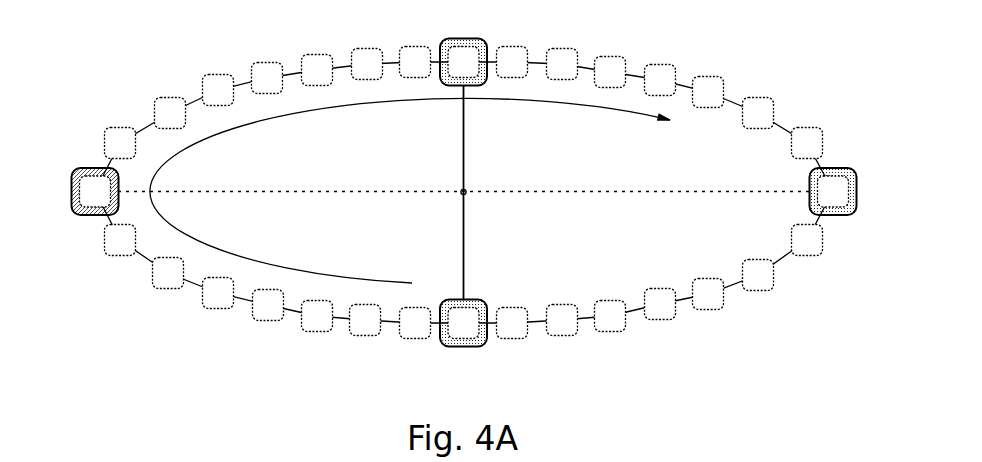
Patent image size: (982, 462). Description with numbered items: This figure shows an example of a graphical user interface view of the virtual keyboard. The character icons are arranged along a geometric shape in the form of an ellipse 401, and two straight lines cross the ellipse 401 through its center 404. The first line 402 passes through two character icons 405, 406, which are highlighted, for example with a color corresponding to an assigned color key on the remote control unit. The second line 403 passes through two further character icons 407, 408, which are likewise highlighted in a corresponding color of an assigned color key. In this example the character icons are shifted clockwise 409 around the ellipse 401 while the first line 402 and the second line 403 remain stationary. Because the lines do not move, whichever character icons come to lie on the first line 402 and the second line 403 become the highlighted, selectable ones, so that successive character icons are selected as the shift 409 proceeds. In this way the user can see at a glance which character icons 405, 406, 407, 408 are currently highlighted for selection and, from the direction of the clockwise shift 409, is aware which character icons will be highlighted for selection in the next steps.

The ellipse 401 is at (723, 34).
The first line 402 is at (723, 172).
The second line 403 is at (463, 140).
The center 404 is at (553, 242).
The character icon 405 is at (833, 192).
The character icon 406 is at (95, 192).
The character icon 407 is at (463, 322).
The character icon 408 is at (463, 58).
The clockwise shift 409 is at (320, 277).